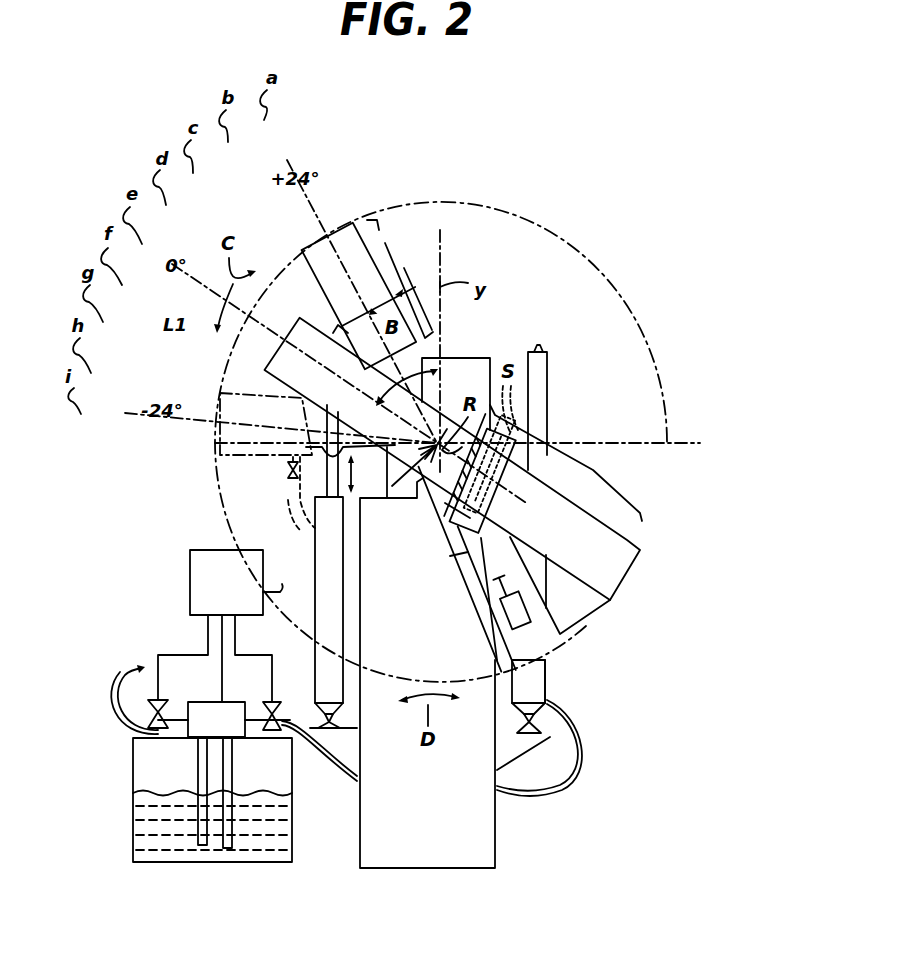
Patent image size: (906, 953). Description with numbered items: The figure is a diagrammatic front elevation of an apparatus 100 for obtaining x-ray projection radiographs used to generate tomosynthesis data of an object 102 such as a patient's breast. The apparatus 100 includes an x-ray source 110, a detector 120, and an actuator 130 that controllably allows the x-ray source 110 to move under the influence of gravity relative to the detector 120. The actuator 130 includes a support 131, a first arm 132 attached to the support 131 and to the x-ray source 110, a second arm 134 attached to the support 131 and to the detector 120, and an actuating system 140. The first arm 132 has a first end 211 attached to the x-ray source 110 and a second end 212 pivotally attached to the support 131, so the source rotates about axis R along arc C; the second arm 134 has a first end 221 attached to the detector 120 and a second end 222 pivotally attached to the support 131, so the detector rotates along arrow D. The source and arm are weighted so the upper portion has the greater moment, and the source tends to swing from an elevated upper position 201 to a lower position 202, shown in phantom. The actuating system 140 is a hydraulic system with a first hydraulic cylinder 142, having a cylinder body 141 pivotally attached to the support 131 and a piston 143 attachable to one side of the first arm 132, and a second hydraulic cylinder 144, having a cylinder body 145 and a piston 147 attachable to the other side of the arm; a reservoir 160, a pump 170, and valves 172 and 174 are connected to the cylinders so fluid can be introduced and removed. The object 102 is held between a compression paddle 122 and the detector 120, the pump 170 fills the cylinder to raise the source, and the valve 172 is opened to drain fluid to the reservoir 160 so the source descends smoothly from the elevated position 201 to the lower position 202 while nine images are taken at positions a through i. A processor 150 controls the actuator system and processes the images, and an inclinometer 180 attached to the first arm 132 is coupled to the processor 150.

The apparatus 100 is at (598, 208).
The object 102 is at (503, 484).
The x-ray source 110 is at (358, 250).
The detector 120 is at (497, 515).
The compression paddle 122 is at (444, 503).
The actuator 130 is at (619, 636).
The support 131 is at (485, 843).
The first arm 132 is at (446, 561).
The second arm 134 is at (630, 541).
The actuating system 140 is at (312, 570).
The cylinder body 141 is at (326, 672).
The first hydraulic cylinder 142 is at (290, 512).
The piston 143 is at (326, 486).
The second hydraulic cylinder 144 is at (547, 668).
The cylinder body 145 is at (546, 686).
The piston 147 is at (548, 386).
The processor 150 is at (200, 567).
The reservoir 160 is at (215, 865).
The pump 170 is at (200, 703).
The valve 172 is at (145, 731).
The valve 174 is at (285, 738).
The inclinometer 180 is at (525, 607).
The elevated upper position 201 is at (345, 209).
The lower position 202 is at (216, 450).
The first end 211 is at (403, 273).
The second end 212 is at (451, 556).
The first end 221 is at (585, 474).
The second end 222 is at (322, 448).